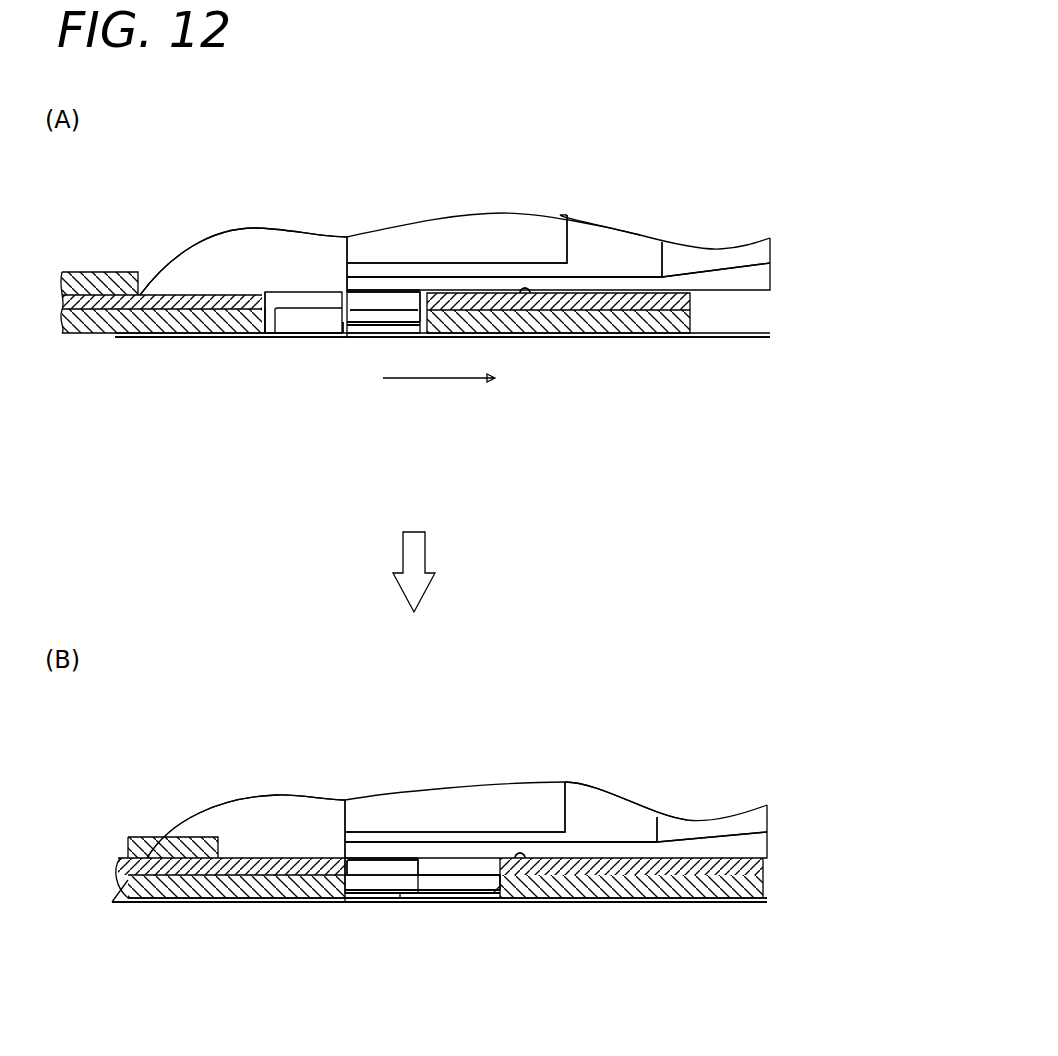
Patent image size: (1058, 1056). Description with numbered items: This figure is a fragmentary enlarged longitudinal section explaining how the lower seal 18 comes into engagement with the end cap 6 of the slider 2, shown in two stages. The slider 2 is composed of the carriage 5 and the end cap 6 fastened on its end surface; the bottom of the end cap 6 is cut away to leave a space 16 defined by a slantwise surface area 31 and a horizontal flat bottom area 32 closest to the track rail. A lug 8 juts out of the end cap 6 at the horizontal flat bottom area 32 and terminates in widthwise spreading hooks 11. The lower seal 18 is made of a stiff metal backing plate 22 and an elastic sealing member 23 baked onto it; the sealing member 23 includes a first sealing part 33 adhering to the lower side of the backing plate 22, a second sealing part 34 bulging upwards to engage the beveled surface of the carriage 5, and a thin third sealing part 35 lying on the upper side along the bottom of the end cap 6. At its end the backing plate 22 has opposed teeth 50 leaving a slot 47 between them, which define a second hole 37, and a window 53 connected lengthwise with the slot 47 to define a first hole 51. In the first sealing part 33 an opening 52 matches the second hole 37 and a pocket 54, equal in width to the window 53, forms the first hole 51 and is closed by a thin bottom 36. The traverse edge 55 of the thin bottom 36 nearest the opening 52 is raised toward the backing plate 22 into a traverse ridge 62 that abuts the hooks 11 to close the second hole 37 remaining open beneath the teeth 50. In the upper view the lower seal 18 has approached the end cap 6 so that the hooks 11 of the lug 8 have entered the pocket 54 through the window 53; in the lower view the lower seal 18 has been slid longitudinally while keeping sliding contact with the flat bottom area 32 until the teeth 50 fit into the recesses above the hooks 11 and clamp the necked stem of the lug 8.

The slider 2 is at (567, 214).
The carriage 5 is at (270, 248).
The end cap 6 is at (482, 237).
The lug 8 is at (368, 300).
The hooks 11 is at (365, 336).
The space 16 is at (458, 288).
The lower seal 18 is at (605, 338).
The metal backing plate 22 is at (200, 296).
The sealing member 23 is at (90, 288).
The slantwise surface area 31 is at (503, 559).
The horizontal flat bottom area 32 is at (530, 296).
The first sealing part 33 is at (207, 332).
The second sealing part 34 is at (110, 283).
The third sealing part 35 is at (578, 297).
The thin bottom 36 is at (388, 337).
The second hole 37 is at (327, 338).
The slot 47 is at (275, 322).
The teeth 50 is at (303, 300).
The first hole 51 is at (415, 336).
The opening 52 is at (305, 330).
The window 53 is at (383, 300).
The pocket 54 is at (400, 300).
The traverse edge 55 is at (350, 336).
The traverse ridge 62 is at (352, 300).